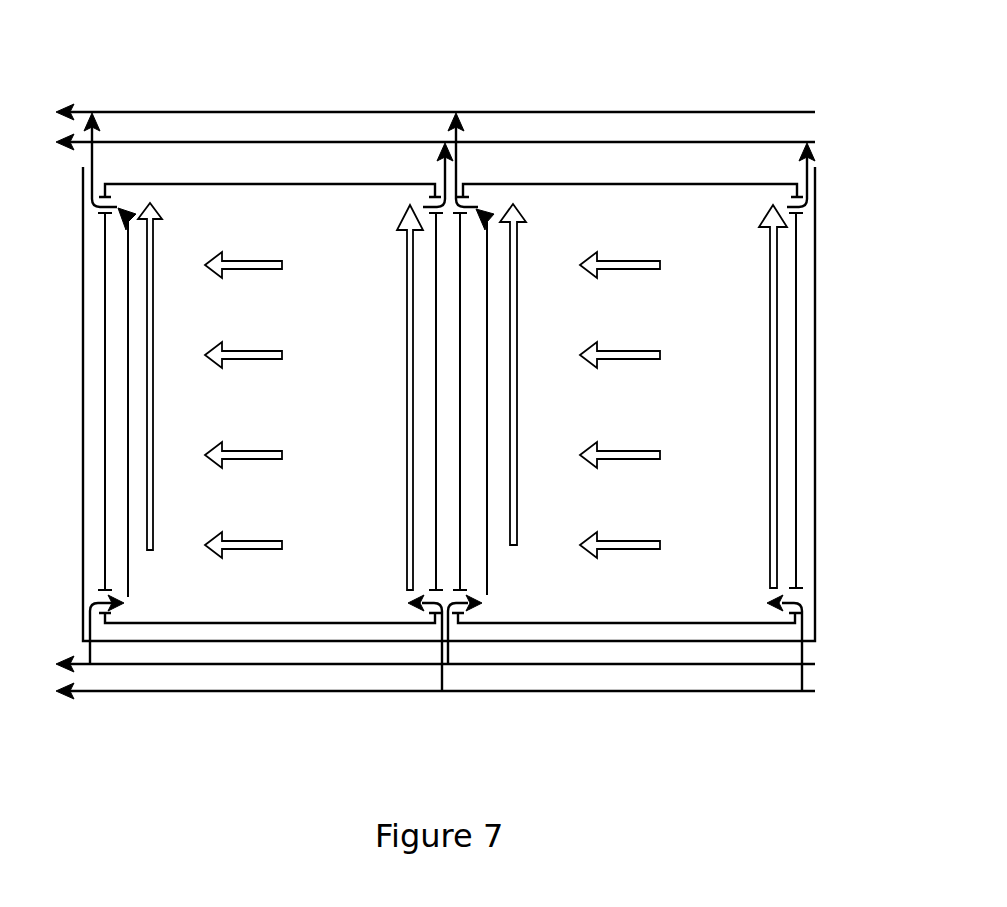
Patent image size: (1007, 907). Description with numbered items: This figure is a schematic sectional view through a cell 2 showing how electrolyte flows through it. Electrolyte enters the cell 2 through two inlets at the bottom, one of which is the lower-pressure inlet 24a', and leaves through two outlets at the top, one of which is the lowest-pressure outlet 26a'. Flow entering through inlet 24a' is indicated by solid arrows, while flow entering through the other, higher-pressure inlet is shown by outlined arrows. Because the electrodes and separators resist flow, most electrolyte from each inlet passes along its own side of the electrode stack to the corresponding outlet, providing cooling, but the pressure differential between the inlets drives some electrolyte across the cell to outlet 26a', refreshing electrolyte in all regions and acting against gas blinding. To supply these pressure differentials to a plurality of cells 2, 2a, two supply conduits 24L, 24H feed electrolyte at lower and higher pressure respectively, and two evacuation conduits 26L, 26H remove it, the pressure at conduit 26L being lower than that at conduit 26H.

The cell 2 is at (232, 578).
The cell 2a is at (783, 452).
The inlet 24a' is at (110, 689).
The conduit 24L is at (580, 694).
The conduit 24H is at (695, 693).
The outlet 26a' is at (124, 116).
The conduit 26L is at (572, 110).
The conduit 26H is at (677, 140).